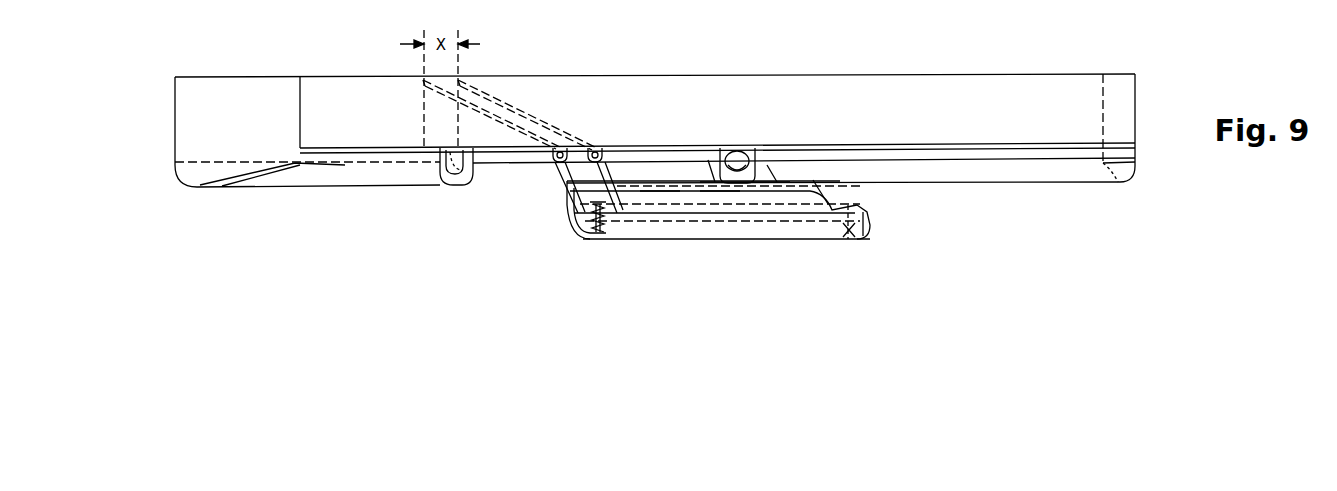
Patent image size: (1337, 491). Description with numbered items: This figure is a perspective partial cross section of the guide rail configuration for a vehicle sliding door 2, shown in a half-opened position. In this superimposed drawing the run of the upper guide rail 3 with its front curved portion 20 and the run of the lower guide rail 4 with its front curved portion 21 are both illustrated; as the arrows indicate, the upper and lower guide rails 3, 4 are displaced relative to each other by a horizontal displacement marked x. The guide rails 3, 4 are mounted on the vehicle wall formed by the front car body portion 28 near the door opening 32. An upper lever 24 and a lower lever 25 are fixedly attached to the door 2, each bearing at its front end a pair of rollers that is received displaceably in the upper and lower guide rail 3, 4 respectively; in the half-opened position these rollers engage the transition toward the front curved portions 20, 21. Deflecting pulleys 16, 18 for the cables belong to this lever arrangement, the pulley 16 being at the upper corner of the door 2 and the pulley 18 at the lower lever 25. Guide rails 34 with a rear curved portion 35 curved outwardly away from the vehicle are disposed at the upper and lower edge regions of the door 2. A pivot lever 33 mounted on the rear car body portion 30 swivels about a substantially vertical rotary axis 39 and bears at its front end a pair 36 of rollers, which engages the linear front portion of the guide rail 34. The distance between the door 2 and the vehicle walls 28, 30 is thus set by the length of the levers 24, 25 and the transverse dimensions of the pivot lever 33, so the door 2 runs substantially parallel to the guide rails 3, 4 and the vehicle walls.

The sliding door 2 is at (802, 238).
The upper guide rail 3 is at (655, 100).
The lower guide rail 4 is at (665, 146).
The deflecting pulley 16 is at (597, 150).
The deflecting pulley 18 is at (560, 150).
The front curved portion 20 is at (513, 112).
The front curved portion 21 is at (458, 102).
The upper lever 24 is at (585, 210).
The lower lever 25 is at (567, 172).
The front car body portion 28 is at (293, 180).
The rear car body portion 30 is at (1037, 172).
The door opening 32 is at (408, 340).
The pivot lever 33 is at (725, 146).
The guide rail 34 is at (658, 187).
The rear curved portion 35 is at (826, 204).
The pair of rollers or wheels 36 is at (717, 185).
The rotary axis 39 is at (755, 146).